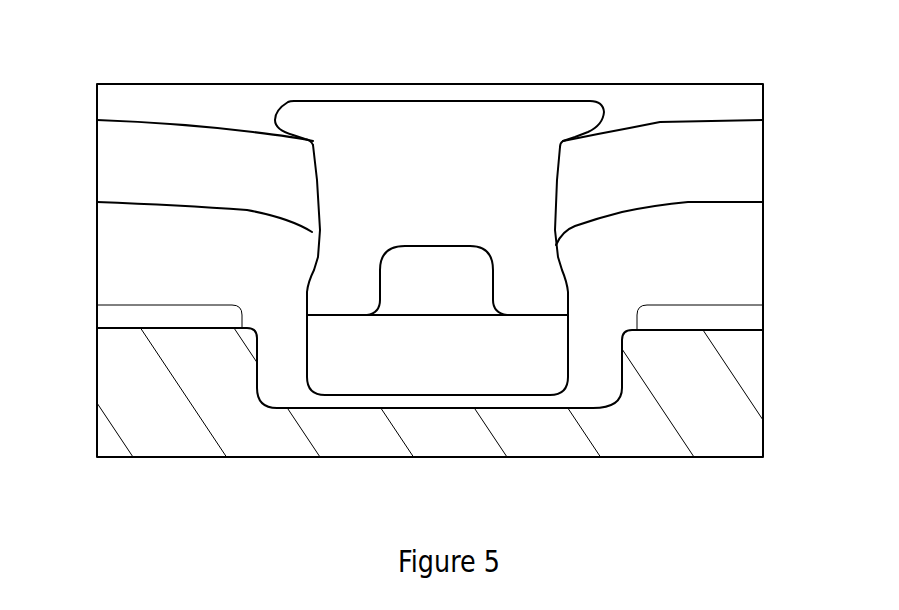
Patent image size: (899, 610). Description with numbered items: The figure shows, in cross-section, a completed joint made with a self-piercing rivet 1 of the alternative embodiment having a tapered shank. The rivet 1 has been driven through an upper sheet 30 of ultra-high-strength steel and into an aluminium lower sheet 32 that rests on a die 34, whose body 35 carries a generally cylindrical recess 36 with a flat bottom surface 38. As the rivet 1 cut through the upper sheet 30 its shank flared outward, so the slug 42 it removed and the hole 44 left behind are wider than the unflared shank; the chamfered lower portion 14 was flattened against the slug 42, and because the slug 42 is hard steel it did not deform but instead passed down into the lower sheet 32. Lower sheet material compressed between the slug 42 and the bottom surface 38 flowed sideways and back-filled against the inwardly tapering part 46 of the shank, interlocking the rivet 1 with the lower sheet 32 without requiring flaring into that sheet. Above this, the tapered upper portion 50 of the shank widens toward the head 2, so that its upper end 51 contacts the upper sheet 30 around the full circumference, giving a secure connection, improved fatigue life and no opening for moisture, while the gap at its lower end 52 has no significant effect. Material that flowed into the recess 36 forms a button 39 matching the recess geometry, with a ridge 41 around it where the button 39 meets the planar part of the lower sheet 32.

The rivet 1 is at (433, 160).
The head 2 is at (288, 121).
The chamfered lower portion 14 is at (328, 302).
The UHSS sheet 30 is at (720, 180).
The aluminium sheet 32 is at (722, 260).
The die 34 is at (744, 374).
The body 35 is at (653, 400).
The recess 36 is at (347, 410).
The flat bottom surface 38 is at (430, 412).
The button 39 is at (593, 397).
The ridge 41 is at (243, 325).
The slug 42 is at (500, 343).
The hole 44 is at (313, 210).
The inwardly tapering part 46 is at (559, 265).
The upper portion 50 is at (333, 193).
The upper end 51 is at (565, 152).
The lower end 52 is at (559, 235).